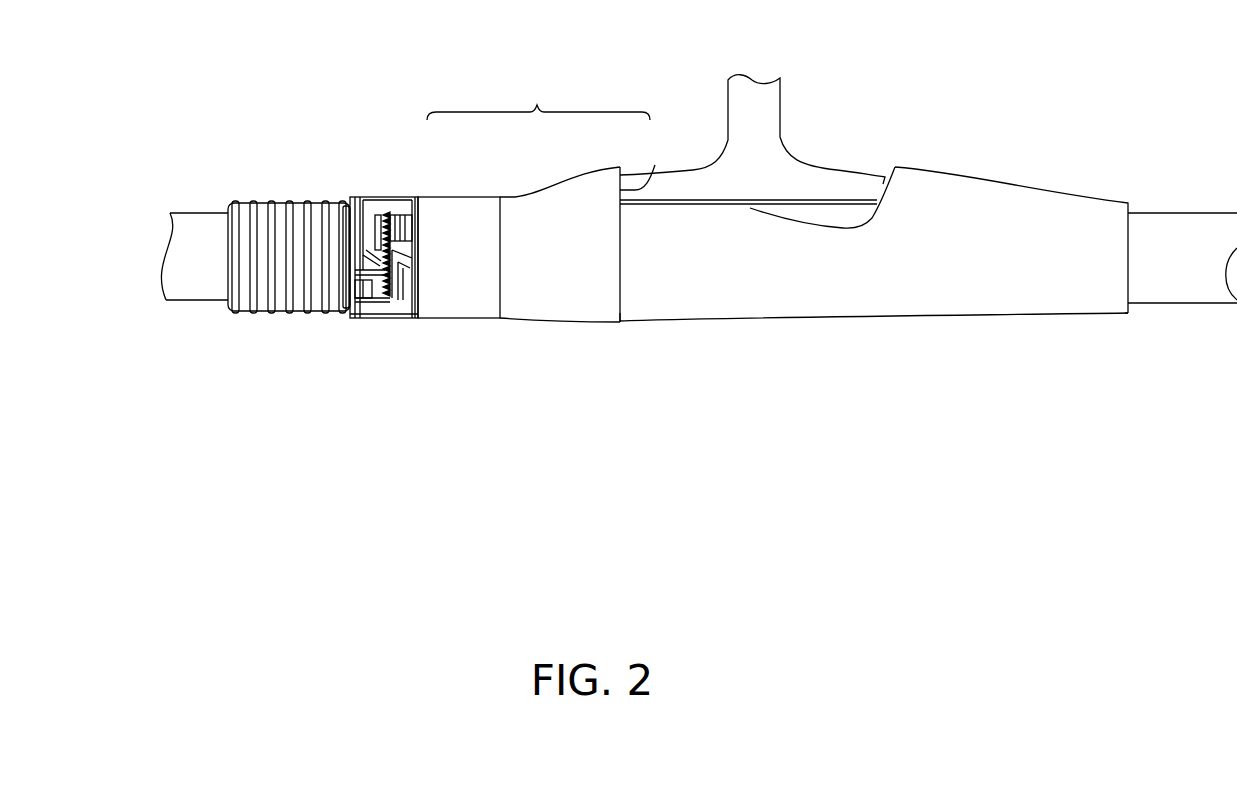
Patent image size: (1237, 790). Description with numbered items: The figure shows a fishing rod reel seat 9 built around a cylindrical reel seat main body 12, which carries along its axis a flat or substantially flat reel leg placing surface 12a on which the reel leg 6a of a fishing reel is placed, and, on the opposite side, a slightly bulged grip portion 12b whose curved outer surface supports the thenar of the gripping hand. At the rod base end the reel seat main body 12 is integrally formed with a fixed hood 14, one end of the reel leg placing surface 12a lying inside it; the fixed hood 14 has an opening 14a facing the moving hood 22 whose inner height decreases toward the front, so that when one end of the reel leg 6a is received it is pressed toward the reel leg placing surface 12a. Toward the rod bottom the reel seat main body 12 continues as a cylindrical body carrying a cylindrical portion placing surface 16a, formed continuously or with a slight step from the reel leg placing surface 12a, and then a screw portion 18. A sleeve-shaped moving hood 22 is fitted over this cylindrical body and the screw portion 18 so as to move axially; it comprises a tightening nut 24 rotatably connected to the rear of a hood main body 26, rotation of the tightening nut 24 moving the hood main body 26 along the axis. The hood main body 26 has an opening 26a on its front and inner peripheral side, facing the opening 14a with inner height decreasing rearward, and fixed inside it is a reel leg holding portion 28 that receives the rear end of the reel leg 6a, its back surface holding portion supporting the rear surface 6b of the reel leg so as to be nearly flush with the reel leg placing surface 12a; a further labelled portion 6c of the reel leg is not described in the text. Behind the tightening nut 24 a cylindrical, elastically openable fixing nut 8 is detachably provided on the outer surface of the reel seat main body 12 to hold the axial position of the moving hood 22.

The reel seat 9 is at (729, 388).
The fixing nut 8 is at (382, 200).
The cylindrical portion placing surface 16a is at (331, 203).
The screw portion 18 is at (330, 312).
The moving hood 22 is at (538, 96).
The tightening nut 24 is at (442, 196).
The hood main body 26 is at (516, 196).
The reel leg holding portion 28 is at (624, 176).
The opening of hood main body 26a is at (655, 165).
The reel leg 6a is at (734, 96).
The rear surface of reel leg 6b is at (712, 206).
The cable flared portion 6c is at (838, 170).
The reel seat main body 12 is at (925, 303).
The reel leg placing surface 12a is at (671, 198).
The grip portion 12b is at (793, 305).
The fixed hood 14 is at (937, 170).
The opening of fixed hood 14a is at (887, 178).